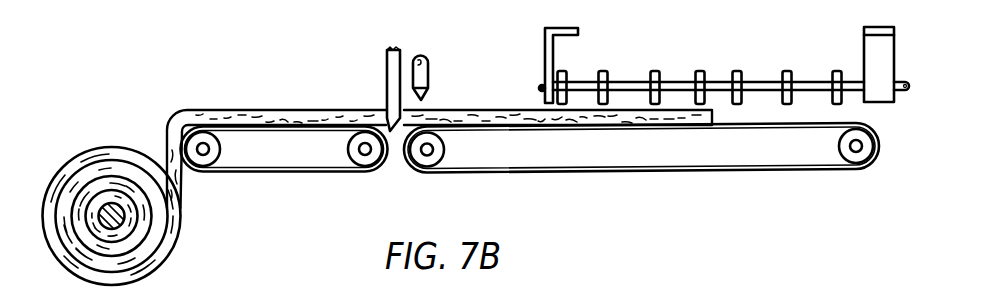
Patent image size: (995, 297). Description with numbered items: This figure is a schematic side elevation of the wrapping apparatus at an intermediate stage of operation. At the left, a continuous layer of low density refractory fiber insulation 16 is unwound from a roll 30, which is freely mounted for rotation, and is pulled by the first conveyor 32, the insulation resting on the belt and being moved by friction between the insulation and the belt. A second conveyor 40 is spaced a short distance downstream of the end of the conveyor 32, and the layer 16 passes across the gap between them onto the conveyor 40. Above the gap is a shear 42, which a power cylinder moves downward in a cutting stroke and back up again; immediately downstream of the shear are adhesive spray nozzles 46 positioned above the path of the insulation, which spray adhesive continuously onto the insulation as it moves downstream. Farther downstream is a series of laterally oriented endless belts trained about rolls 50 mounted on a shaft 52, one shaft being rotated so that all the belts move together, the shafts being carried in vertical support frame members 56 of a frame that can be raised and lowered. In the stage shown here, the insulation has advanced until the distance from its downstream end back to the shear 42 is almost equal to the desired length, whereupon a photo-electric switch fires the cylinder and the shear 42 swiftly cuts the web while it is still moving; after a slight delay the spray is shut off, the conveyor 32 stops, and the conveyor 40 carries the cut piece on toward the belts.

The low density refractory fiber layer 16 is at (291, 110).
The roll 30 is at (107, 147).
The conveyor 32 is at (306, 173).
The conveyor 40 is at (600, 173).
The shear 42 is at (387, 62).
The adhesive spray nozzles 46 is at (428, 64).
The rolls 50 is at (789, 72).
The shaft 52 is at (720, 71).
The vertical support frame members 56 is at (556, 58).